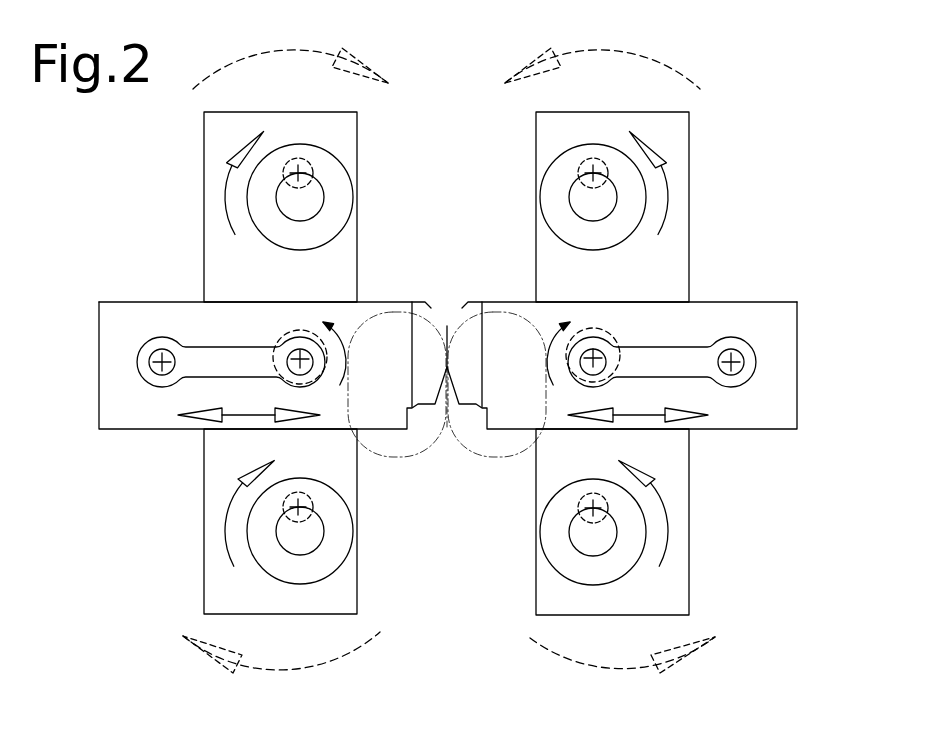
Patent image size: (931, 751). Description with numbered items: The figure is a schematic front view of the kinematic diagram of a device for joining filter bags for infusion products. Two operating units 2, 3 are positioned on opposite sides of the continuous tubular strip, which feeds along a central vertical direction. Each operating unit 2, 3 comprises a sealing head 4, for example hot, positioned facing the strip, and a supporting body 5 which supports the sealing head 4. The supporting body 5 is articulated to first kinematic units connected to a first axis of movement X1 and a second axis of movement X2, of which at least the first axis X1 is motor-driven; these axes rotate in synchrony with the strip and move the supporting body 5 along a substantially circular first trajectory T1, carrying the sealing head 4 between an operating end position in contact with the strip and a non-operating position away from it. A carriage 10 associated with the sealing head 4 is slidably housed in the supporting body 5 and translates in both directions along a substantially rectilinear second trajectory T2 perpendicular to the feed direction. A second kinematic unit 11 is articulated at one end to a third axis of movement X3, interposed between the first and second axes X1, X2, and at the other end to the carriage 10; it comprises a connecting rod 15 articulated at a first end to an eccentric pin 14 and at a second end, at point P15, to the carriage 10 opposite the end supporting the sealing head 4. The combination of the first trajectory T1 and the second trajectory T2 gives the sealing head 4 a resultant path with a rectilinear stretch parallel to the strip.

The operating unit 2 is at (133, 455).
The operating unit 3 is at (741, 473).
The sealing head 4 is at (468, 332).
The supporting body 5 is at (223, 256).
The carriage 10 is at (148, 312).
The second kinematic unit 11 is at (195, 388).
The eccentric pin 14 is at (278, 342).
The connecting rod 15 is at (213, 347).
The articulation point of connecting rod P15 is at (150, 358).
The first trajectory T1 is at (277, 52).
The second trajectory T2 is at (248, 416).
The first axis of movement X1 is at (298, 173).
The second axis of movement X2 is at (298, 507).
The third axis of movement X3 is at (292, 308).